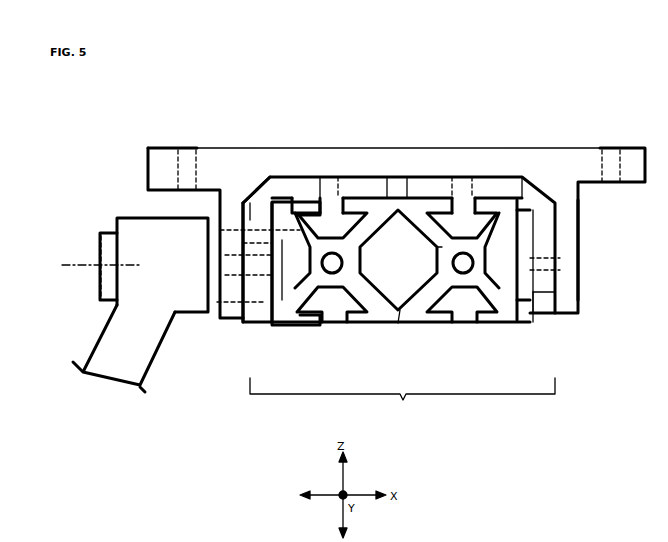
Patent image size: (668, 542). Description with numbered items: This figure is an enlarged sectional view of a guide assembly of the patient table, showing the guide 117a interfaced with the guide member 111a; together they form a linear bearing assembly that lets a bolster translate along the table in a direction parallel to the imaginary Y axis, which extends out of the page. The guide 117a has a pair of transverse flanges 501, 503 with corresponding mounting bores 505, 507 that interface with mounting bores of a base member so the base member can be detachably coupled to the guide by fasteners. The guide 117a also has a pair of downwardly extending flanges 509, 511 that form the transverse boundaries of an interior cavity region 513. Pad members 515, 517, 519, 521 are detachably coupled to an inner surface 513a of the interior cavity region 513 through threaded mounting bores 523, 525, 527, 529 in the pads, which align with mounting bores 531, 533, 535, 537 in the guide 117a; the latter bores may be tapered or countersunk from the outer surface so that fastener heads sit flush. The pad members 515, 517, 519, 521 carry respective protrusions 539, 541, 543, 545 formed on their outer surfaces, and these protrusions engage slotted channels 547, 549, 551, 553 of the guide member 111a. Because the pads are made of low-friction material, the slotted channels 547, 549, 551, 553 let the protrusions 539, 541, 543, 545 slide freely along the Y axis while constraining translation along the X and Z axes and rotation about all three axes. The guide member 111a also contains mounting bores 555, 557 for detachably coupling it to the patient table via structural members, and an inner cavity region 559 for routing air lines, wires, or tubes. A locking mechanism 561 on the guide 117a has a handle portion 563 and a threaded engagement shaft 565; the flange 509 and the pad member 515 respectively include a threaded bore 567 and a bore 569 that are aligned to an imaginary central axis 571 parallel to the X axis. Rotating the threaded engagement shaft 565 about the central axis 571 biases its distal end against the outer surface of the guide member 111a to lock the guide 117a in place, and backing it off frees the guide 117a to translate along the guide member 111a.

The transverse flange 501 is at (148, 160).
The transverse flange 503 is at (630, 180).
The mounting bore 505 is at (180, 150).
The mounting bore 507 is at (610, 150).
The downwardly extending flange 509 is at (235, 318).
The downwardly extending flange 511 is at (579, 220).
The interior cavity region 513 is at (399, 301).
The inner surface 513a is at (545, 292).
The pad member 515 is at (276, 318).
The pad member 517 is at (378, 195).
The pad member 519 is at (500, 190).
The pad member 521 is at (543, 312).
The mounting bore 523 is at (243, 200).
The mounting bore 525 is at (340, 195).
The mounting bore 527 is at (463, 200).
The mounting bore 529 is at (540, 285).
The mounting bore 531 is at (252, 305).
The mounting bore 533 is at (337, 210).
The mounting bore 535 is at (455, 200).
The mounting bore 537 is at (580, 250).
The protrusion 539 is at (300, 258).
The protrusion 541 is at (370, 232).
The protrusion 543 is at (432, 246).
The protrusion 545 is at (508, 290).
The slotted channel 547 is at (282, 268).
The slotted channel 549 is at (330, 232).
The slotted channel 551 is at (440, 232).
The slotted channel 553 is at (517, 300).
The mounting bore 555 is at (333, 273).
The mounting bore 557 is at (466, 273).
The inner cavity region 559 is at (415, 318).
The locking mechanism 561 is at (187, 298).
The handle portion 563 is at (105, 353).
The threaded engagement shaft 565 is at (100, 232).
The threaded bore 567 is at (233, 240).
The bore 569 is at (256, 206).
The central axis 571 is at (89, 265).
The guide member 111a is at (395, 322).
The guide 117a is at (275, 177).